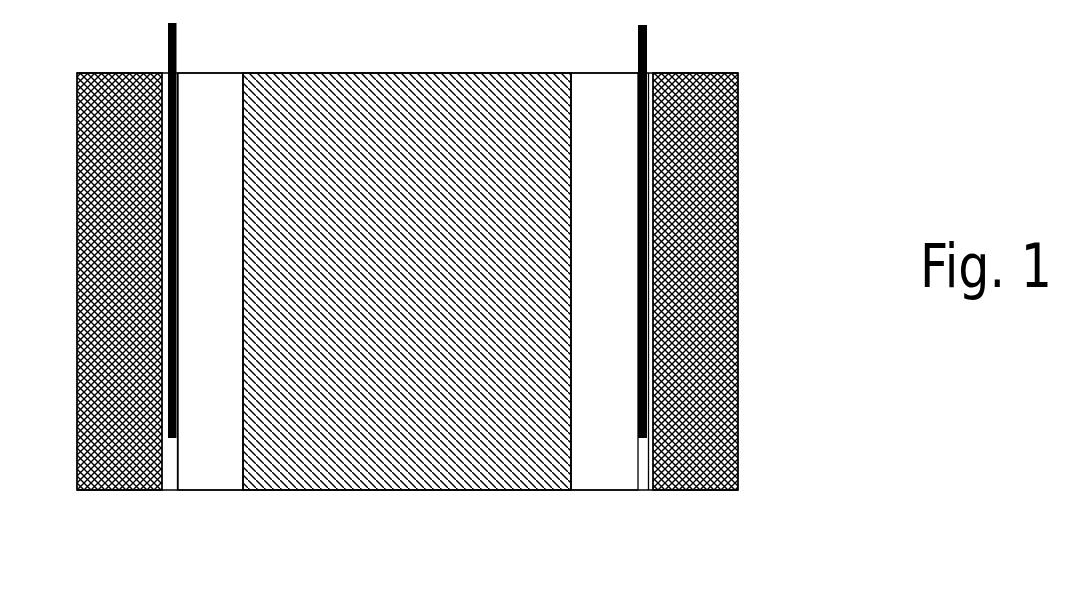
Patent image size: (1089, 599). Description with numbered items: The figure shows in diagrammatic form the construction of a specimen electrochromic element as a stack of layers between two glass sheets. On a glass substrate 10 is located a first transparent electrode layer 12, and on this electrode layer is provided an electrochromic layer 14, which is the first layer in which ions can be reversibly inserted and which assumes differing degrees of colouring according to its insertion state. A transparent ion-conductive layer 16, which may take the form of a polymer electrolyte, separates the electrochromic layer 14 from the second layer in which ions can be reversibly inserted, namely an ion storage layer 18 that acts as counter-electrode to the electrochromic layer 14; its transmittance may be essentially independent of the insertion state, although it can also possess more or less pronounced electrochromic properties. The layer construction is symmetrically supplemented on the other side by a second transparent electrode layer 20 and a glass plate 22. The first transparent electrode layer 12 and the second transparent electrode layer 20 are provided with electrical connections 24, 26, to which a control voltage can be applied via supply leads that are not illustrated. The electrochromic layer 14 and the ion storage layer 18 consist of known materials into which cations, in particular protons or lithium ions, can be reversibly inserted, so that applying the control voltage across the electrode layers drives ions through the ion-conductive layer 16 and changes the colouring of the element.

The glass substrate 10 is at (110, 438).
The first transparent electrode layer 12 is at (168, 452).
The electrochromic layer 14 is at (193, 438).
The transparent ion-conductive layer 16 is at (408, 438).
The ion storage layer 18 is at (603, 438).
The second transparent electrode layer 20 is at (643, 458).
The glass plate 22 is at (685, 438).
The electrical connection 24 is at (178, 42).
The electrical connection 26 is at (655, 43).